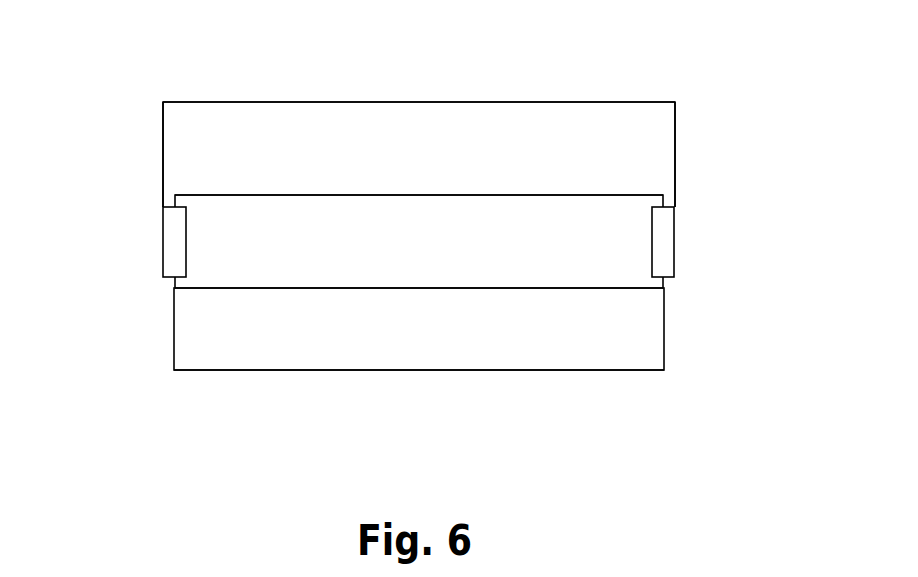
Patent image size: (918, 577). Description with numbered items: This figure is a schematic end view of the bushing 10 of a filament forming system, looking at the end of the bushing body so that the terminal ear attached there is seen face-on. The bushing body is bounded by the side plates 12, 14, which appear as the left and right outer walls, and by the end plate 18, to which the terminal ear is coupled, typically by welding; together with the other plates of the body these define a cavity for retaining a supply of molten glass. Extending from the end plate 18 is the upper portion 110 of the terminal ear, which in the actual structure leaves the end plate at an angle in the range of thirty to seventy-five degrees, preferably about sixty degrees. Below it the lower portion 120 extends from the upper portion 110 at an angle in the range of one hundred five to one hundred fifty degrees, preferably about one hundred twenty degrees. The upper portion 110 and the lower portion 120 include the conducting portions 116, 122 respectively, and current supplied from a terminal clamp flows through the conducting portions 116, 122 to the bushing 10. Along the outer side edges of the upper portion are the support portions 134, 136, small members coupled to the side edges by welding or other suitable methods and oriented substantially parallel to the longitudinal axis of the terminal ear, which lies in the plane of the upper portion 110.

The bushing 10 is at (342, 102).
The side plate 12 is at (163, 140).
The side plate 14 is at (677, 148).
The end plate 18 is at (462, 137).
The upper portion 110 is at (275, 245).
The conducting portion 116 is at (518, 222).
The lower portion 120 is at (652, 322).
The conducting portion 122 is at (557, 347).
The support portion 134 is at (170, 242).
The support portion 136 is at (668, 242).